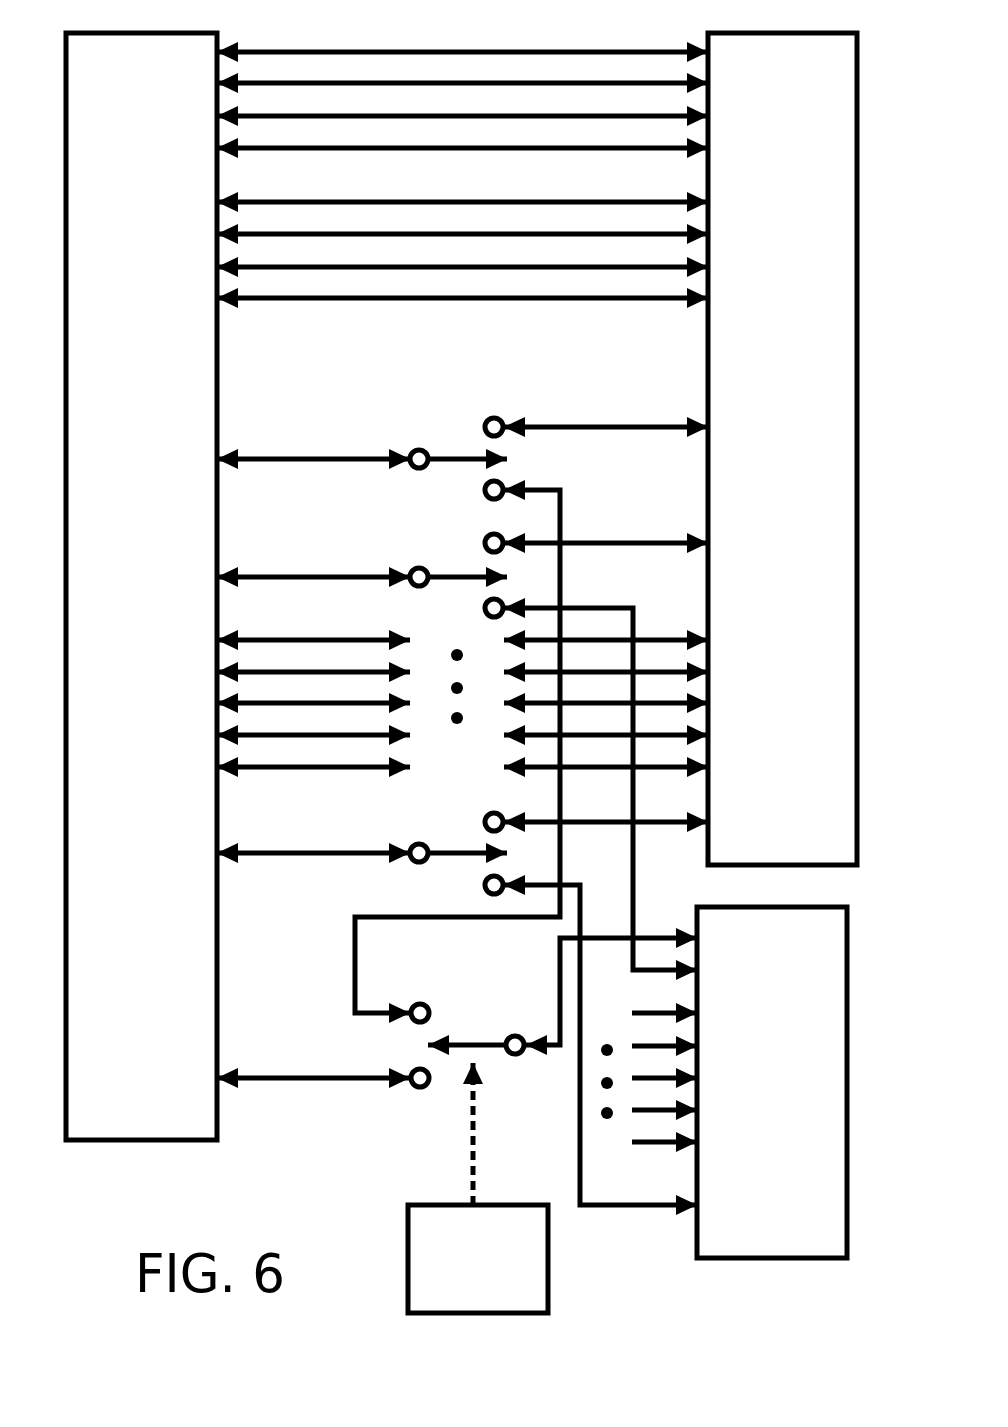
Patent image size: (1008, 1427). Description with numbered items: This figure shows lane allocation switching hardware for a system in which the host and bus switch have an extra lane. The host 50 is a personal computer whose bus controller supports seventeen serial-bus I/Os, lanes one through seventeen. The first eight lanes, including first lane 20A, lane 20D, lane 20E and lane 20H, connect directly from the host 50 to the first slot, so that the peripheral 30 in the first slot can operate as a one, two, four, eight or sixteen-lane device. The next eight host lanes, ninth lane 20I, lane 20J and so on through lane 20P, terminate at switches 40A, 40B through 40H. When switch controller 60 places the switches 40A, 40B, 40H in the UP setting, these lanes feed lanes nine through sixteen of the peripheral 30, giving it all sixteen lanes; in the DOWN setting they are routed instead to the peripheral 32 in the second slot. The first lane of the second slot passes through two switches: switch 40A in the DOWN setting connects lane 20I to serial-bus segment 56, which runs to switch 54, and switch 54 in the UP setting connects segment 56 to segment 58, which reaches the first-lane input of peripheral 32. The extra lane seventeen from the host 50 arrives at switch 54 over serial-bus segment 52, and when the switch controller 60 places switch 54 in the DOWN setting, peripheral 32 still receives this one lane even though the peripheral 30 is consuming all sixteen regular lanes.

The first lane 20A is at (384, 51).
The lane 20D is at (405, 152).
The lane 20E is at (500, 199).
The lane 20H is at (427, 302).
The 9th lane 20I is at (318, 453).
The lane 20J is at (318, 572).
The lane 20P is at (318, 851).
The switch 40A is at (448, 436).
The switch 40B is at (446, 553).
The switch 40H is at (446, 831).
The host 50 is at (152, 720).
The peripheral 30 is at (815, 498).
The peripheral 32 is at (825, 1135).
The serial-bus segment 52 is at (318, 1074).
The switch 54 is at (456, 1026).
The serial-bus segment 56 is at (564, 505).
The segment 58 is at (649, 936).
The switch controller 60 is at (525, 1292).